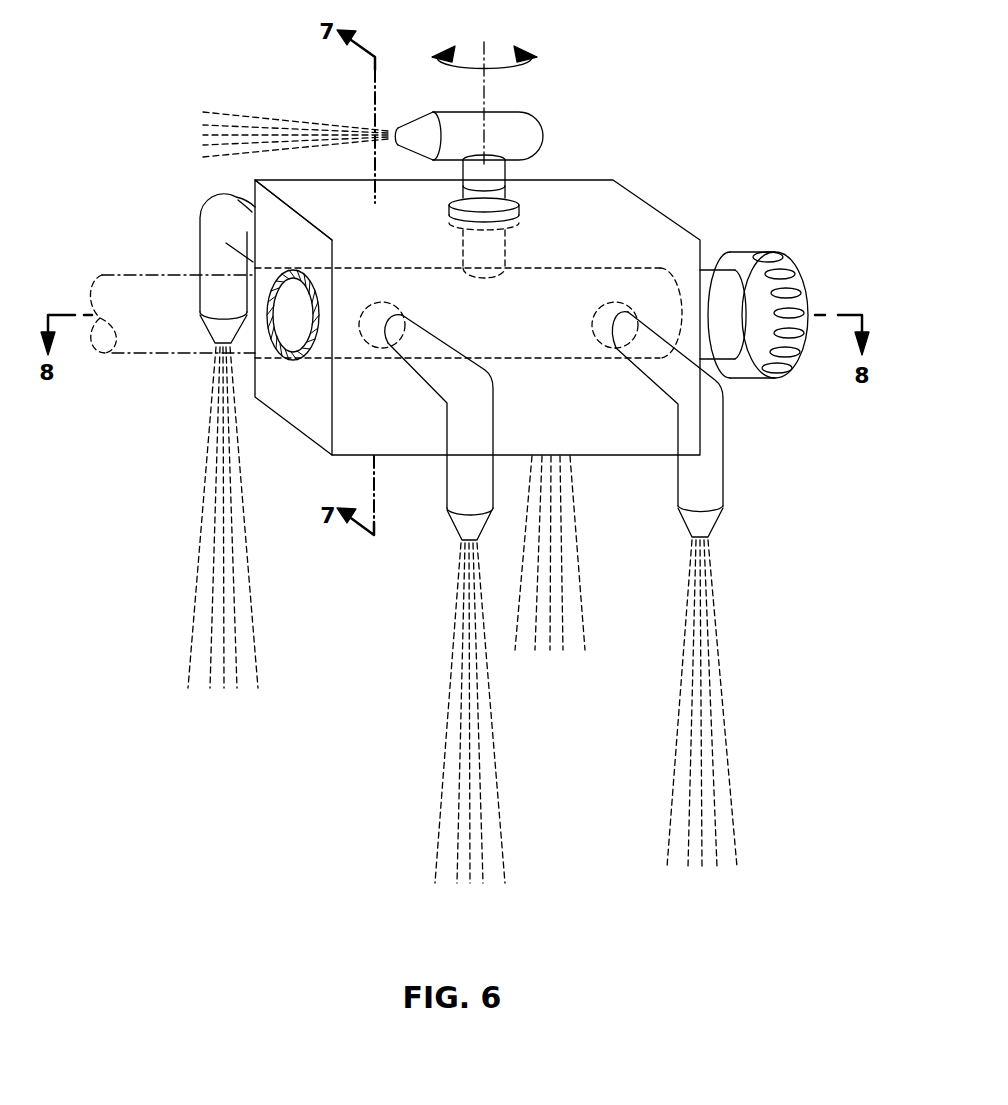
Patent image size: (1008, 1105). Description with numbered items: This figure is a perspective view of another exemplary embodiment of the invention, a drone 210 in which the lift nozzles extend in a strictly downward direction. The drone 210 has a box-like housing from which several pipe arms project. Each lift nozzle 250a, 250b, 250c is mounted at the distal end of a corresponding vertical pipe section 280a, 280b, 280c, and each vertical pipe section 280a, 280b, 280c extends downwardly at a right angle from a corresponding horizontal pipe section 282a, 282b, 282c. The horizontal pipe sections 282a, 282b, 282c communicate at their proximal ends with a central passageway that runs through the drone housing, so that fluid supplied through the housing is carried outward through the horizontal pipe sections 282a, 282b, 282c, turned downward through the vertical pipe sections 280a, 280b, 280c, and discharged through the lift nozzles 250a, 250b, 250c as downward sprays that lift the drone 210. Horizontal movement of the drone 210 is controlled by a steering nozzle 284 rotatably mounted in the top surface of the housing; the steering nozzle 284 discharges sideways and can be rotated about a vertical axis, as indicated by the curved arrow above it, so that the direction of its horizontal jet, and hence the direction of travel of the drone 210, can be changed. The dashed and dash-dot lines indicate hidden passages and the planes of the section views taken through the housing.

The drone 210 is at (645, 157).
The steering nozzle 284 is at (515, 113).
The vertical pipe section 280a is at (456, 472).
The vertical pipe section 280b is at (715, 474).
The vertical pipe section 280c is at (208, 248).
The horizontal pipe section 282a is at (415, 372).
The horizontal pipe section 282b is at (655, 371).
The horizontal pipe section 282c is at (238, 200).
The lift nozzle 250a is at (458, 520).
The lift nozzle 250b is at (716, 520).
The lift nozzle 250c is at (203, 325).